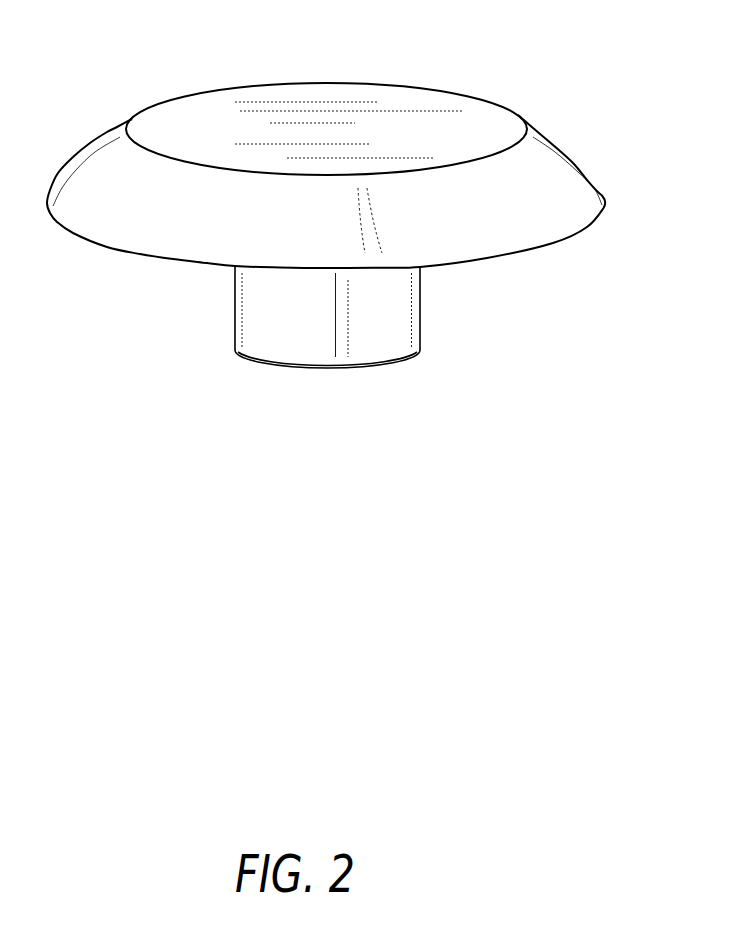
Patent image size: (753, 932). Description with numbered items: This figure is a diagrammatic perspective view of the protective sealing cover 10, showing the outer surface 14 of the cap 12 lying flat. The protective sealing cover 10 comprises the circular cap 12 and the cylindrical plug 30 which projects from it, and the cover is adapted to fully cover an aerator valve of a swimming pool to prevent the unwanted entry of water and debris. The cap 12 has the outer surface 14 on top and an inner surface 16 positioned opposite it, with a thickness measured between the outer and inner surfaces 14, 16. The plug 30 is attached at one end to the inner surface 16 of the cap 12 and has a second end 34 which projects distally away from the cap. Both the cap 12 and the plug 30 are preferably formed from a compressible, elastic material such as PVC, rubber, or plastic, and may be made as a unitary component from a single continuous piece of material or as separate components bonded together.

The protective sealing cover 10 is at (361, 250).
The cap 12 is at (361, 150).
The outer surface 14 is at (492, 130).
The inner surface 16 is at (580, 233).
The plug 30 is at (397, 344).
The second end 34 is at (367, 368).